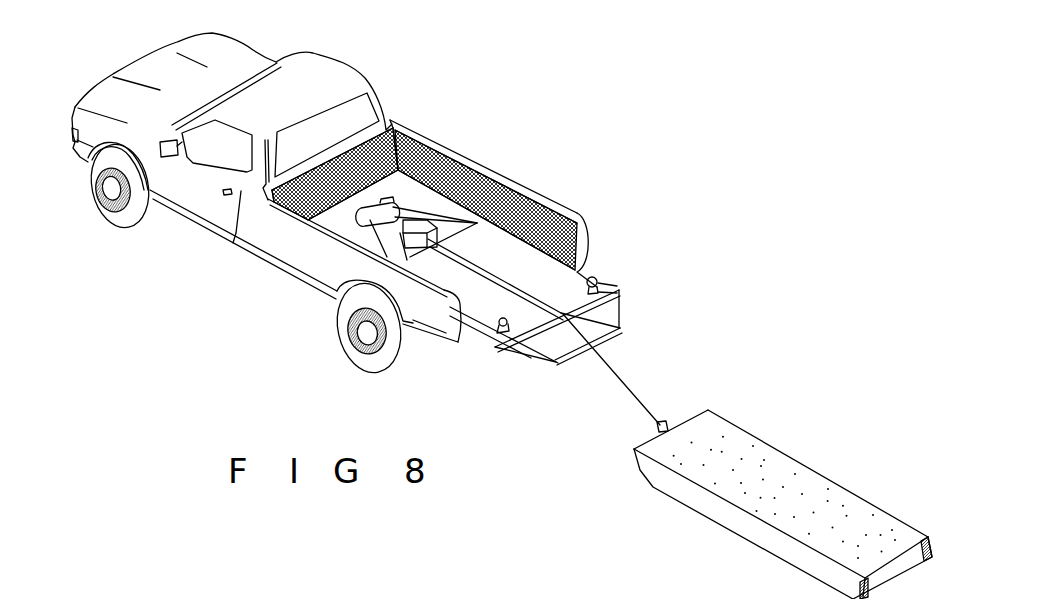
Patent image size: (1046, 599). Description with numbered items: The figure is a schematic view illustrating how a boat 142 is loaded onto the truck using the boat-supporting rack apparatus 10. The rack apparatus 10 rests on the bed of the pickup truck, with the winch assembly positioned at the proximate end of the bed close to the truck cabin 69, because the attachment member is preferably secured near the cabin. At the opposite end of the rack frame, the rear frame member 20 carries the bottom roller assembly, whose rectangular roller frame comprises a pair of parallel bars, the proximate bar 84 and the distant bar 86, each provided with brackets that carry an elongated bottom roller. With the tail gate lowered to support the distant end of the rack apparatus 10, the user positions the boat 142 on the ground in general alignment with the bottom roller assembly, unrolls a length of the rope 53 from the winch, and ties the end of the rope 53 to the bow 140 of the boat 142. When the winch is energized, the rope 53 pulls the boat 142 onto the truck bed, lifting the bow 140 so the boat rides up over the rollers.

The truck cabin 69 is at (352, 63).
The boat-supporting rack apparatus 10 is at (530, 198).
The rear frame member 20 is at (472, 338).
The proximate bar 84 is at (613, 303).
The distant bar 86 is at (618, 334).
The cable or rope 53 is at (632, 384).
The bow 140 is at (720, 418).
The boat 142 is at (857, 497).